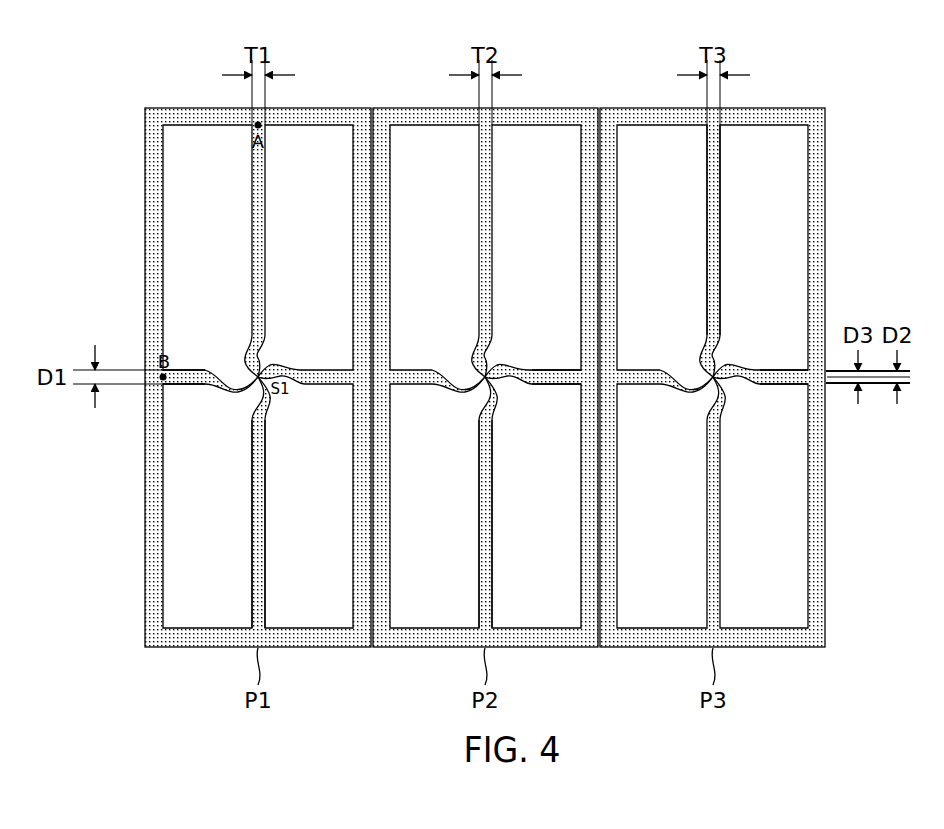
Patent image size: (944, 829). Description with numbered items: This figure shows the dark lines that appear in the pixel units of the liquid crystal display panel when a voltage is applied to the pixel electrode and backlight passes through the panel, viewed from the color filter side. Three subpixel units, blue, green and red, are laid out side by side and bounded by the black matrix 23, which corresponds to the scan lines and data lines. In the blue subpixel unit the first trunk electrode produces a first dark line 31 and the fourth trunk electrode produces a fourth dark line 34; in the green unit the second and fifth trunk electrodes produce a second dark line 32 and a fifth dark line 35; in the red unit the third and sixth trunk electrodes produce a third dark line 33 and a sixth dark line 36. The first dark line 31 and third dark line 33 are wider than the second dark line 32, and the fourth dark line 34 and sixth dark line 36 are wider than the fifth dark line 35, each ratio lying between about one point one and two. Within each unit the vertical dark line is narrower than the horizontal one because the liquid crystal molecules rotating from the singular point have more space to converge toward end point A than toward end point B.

The black matrix 23 is at (155, 296).
The first dark line 31 is at (252, 505).
The second dark line 32 is at (480, 545).
The third dark line 33 is at (712, 243).
The fourth dark line 34 is at (216, 378).
The fifth dark line 35 is at (537, 377).
The sixth dark line 36 is at (757, 372).